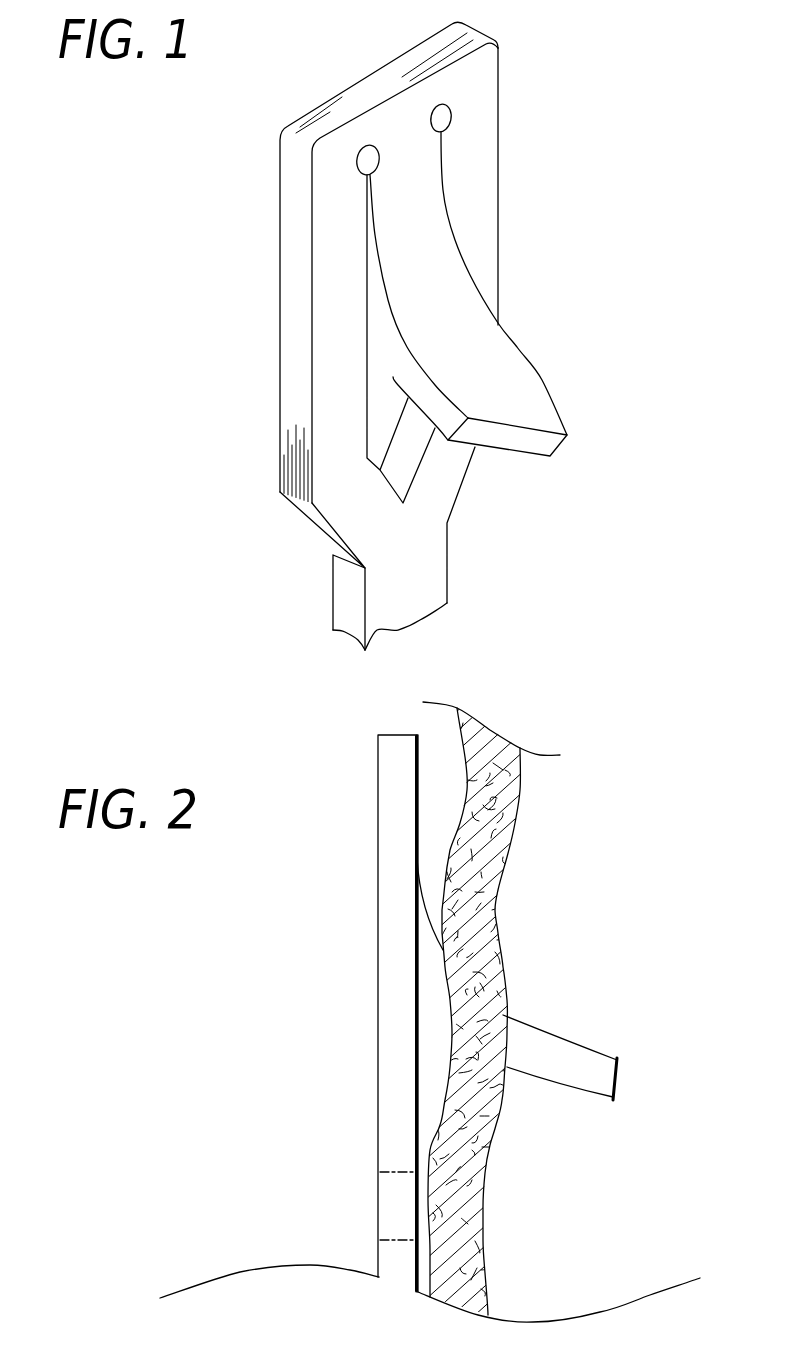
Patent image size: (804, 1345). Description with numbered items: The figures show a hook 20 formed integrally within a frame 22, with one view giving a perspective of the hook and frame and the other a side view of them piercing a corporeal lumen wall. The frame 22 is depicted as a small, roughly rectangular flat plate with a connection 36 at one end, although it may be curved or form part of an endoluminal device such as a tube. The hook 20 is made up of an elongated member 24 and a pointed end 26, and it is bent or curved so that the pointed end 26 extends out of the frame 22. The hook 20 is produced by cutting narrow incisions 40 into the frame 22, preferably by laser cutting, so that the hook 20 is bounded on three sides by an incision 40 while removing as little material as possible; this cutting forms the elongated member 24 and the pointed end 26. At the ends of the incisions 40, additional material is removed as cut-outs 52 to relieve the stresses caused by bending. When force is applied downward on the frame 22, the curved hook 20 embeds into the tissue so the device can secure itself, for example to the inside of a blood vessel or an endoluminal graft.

In FIG. 1, the hook 20 is at (517, 347).
In FIG. 2, the hook 20 is at (443, 1068).
In FIG. 1, the frame 22 is at (500, 102).
In FIG. 2, the frame 22 is at (378, 911).
In FIG. 1, the elongated member 24 is at (393, 360).
In FIG. 2, the elongated member 24 is at (433, 968).
In FIG. 1, the pointed end 26 is at (568, 437).
In FIG. 2, the pointed end 26 is at (640, 1058).
In FIG. 1, the connection 36 is at (433, 557).
In FIG. 2, the connection 36 is at (378, 1256).
In FIG. 1, the incisions 40 is at (453, 171).
In FIG. 1, the cut-outs 52 is at (371, 175).